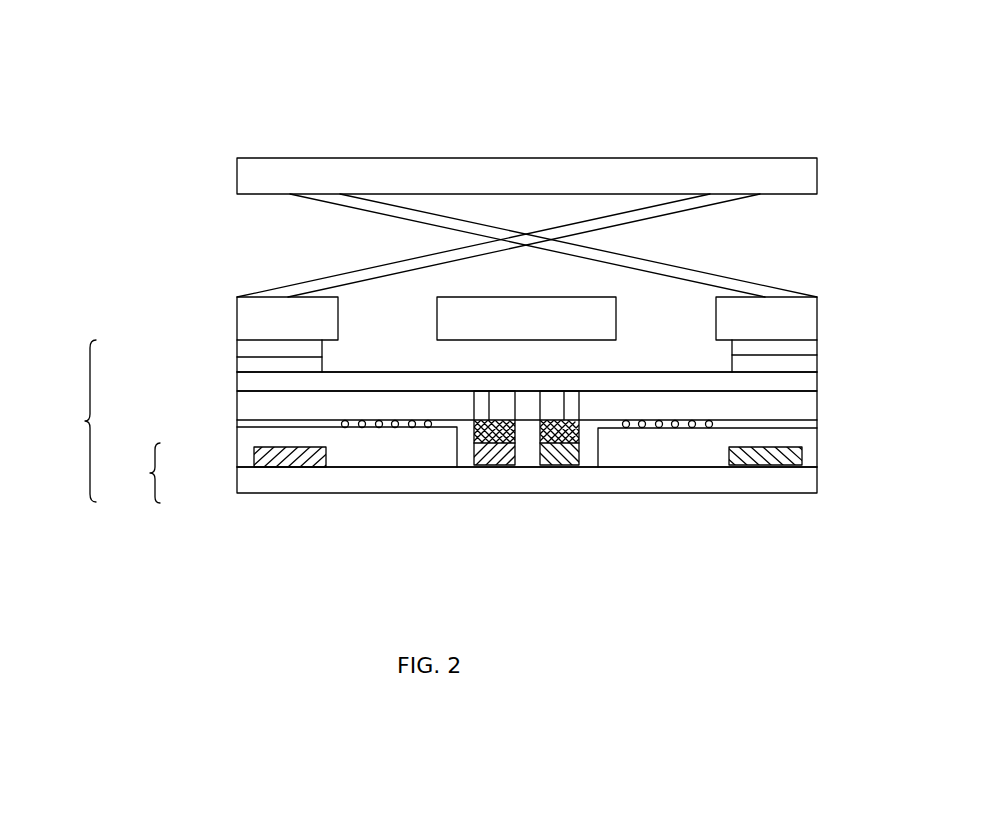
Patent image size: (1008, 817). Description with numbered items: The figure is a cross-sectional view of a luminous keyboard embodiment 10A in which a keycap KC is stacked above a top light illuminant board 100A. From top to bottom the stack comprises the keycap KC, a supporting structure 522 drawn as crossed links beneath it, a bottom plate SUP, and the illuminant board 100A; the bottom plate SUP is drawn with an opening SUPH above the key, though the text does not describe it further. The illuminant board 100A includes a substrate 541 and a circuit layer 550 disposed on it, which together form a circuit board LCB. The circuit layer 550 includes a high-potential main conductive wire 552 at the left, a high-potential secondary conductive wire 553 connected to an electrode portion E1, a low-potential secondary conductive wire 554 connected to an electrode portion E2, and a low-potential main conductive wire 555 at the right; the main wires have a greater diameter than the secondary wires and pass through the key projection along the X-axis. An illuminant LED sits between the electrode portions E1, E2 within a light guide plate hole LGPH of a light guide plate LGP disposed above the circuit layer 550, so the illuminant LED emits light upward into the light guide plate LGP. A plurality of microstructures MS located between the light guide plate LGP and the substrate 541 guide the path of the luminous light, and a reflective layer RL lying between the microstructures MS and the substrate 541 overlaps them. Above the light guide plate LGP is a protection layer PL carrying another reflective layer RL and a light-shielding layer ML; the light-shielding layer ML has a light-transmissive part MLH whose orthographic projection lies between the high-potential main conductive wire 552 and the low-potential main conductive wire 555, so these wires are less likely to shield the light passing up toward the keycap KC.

The embodiment 10A is at (92, 47).
The keycap KC is at (237, 178).
The supporting structure 522 is at (226, 243).
The electrode portion E1 is at (493, 432).
The electrode portion E2 is at (553, 432).
The support layer hole SUPH is at (652, 322).
The light-transmissive part MLH is at (677, 348).
The bottom plate SUP is at (253, 318).
The light-shielding layer ML is at (253, 349).
The reflective layer RL is at (253, 363).
The protection layer PL is at (253, 382).
The light guide plate LGP is at (253, 410).
The light guide plate hole LGPH is at (573, 402).
The illuminant board 100A is at (62, 421).
The circuit board LCB is at (127, 473).
The circuit layer 550 is at (250, 458).
The substrate 541 is at (253, 483).
The high-potential main conductive wire 552 is at (291, 460).
The microstructures MS is at (360, 428).
The high-potential secondary conductive wire 553 is at (495, 456).
The illuminant LED is at (530, 403).
The low-potential secondary conductive wire 554 is at (570, 457).
The low-potential main conductive wire 555 is at (775, 457).